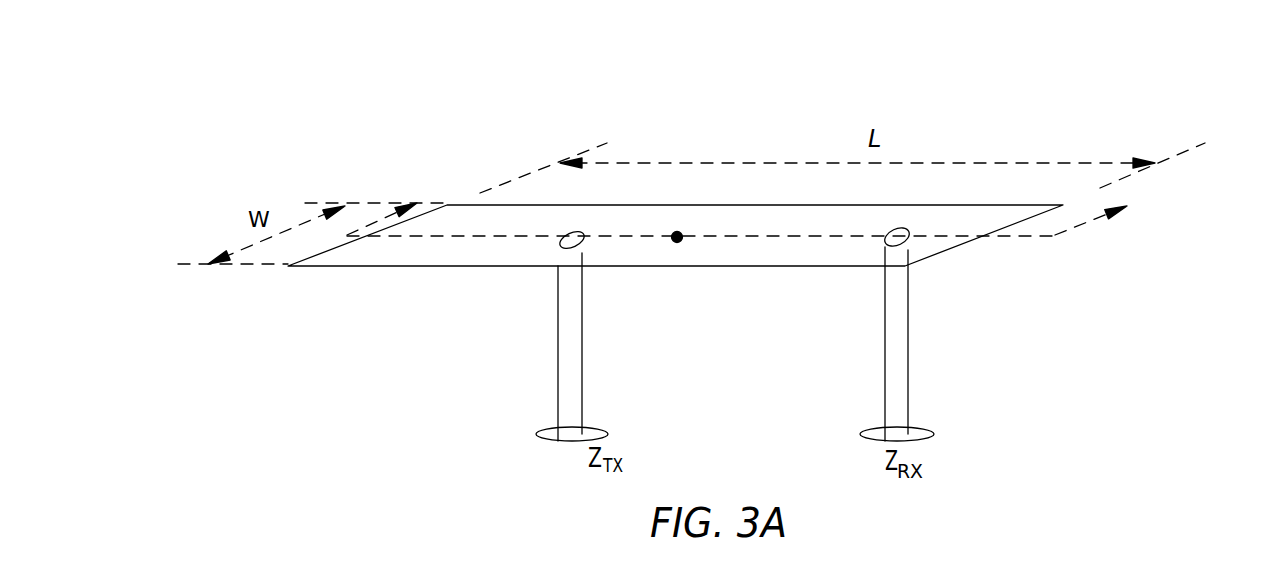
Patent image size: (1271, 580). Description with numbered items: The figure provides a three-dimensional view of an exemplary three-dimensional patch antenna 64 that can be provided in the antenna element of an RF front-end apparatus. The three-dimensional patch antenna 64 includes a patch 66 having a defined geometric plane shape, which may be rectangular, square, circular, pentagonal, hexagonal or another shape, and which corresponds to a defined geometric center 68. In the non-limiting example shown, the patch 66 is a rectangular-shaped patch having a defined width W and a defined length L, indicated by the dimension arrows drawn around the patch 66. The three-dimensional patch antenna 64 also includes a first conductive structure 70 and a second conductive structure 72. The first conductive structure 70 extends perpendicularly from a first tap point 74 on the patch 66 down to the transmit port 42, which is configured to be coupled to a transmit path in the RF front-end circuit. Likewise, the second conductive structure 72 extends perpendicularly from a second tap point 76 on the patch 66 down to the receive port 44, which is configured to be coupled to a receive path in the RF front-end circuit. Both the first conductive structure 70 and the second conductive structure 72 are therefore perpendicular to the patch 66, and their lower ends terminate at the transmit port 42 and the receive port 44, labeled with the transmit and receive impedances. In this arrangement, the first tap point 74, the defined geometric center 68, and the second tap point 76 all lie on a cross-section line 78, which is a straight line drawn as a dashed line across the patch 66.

The transmit port 42 is at (541, 437).
The receive port 44 is at (935, 437).
The 3D patch antenna 64 is at (1199, 96).
The patch 66 is at (473, 267).
The defined geometric center 68 is at (682, 243).
The first conductive structure 70 is at (583, 352).
The second conductive structure 72 is at (884, 345).
The first tap point 74 is at (586, 236).
The second tap point 76 is at (909, 234).
The cross-section line 78 is at (1102, 217).